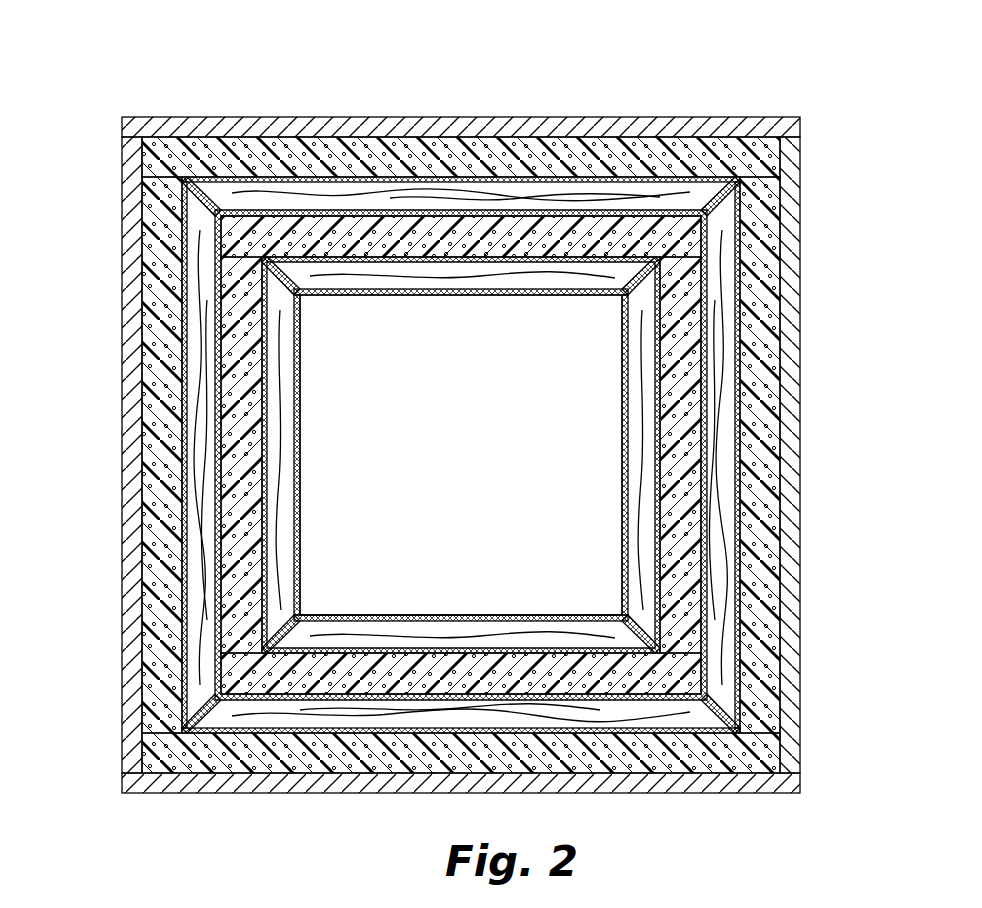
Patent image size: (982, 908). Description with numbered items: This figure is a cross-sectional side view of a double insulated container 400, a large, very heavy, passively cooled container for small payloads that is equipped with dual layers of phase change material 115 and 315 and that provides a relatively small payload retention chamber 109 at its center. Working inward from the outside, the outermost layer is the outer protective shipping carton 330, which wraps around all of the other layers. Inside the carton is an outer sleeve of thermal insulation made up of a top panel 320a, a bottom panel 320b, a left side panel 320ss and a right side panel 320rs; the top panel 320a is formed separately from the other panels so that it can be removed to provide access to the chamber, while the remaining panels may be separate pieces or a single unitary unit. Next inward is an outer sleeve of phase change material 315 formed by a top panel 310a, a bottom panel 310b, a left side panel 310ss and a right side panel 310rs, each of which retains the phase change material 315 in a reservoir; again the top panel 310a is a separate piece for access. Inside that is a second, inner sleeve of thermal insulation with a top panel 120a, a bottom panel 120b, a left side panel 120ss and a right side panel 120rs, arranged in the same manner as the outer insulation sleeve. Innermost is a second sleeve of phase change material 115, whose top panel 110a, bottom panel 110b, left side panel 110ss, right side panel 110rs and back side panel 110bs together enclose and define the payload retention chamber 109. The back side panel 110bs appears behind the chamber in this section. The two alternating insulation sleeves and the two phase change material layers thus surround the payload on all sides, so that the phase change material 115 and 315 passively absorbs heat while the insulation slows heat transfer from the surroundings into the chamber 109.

The double insulated container 400 is at (134, 70).
The outer protective shipping carton 330 is at (745, 124).
The top panel of sleeve of thermal insulation 320a is at (645, 158).
The bottom panel of sleeve of thermal insulation 320b is at (224, 755).
The left side panel of sleeve of thermal insulation 320ss is at (158, 282).
The right side panel of sleeve of thermal insulation 320rs is at (770, 272).
The top panel of sleeve of phase change material 310a is at (300, 176).
The bottom panel of sleeve of phase change material 310b is at (620, 745).
The left side panel of sleeve of phase change material 310ss is at (183, 442).
The right side panel of sleeve of phase change material 310rs is at (740, 430).
The phase change material 315 is at (547, 193).
The top panel of sleeve of thermal insulation 120a is at (583, 232).
The bottom panel of sleeve of thermal insulation 120b is at (370, 680).
The left side panel of sleeve of thermal insulation 120ss is at (240, 356).
The right side panel of sleeve of thermal insulation 120rs is at (690, 347).
The phase change material 115 is at (567, 297).
The top panel of sleeve of phase change material 110a is at (412, 297).
The bottom panel of sleeve of phase change material 110b is at (540, 617).
The left side panel of sleeve of phase change material 110ss is at (300, 407).
The right side panel of sleeve of phase change material 110rs is at (621, 427).
The back side panel of sleeve of phase change material 110bs is at (397, 523).
The payload retention chamber 109 is at (430, 402).